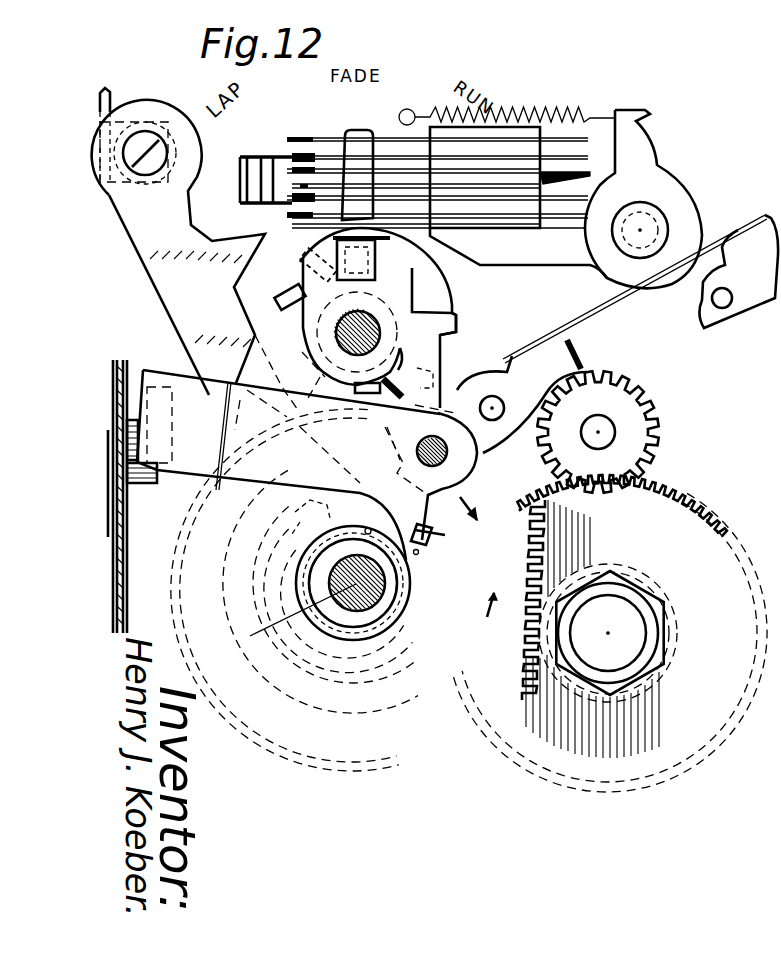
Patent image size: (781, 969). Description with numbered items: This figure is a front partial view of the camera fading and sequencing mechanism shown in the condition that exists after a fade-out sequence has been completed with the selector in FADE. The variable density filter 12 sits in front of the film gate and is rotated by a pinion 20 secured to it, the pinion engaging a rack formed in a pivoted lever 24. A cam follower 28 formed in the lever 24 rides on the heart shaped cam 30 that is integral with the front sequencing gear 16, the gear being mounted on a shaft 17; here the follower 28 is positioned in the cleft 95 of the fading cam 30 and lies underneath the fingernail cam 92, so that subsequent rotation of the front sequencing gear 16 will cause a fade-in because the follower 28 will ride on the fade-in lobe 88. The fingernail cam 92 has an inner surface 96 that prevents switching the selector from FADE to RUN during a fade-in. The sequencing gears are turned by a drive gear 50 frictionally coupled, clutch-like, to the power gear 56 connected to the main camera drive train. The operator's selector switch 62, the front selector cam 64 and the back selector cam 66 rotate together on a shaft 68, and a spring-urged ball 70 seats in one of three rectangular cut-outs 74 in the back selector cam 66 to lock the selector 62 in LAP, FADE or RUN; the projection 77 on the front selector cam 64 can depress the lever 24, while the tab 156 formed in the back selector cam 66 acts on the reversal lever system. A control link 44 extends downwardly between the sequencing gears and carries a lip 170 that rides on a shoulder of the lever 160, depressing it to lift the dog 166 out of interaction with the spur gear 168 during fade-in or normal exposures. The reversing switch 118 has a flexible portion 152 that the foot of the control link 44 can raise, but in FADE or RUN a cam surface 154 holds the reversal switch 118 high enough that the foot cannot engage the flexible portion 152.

The variable density filter 12 is at (131, 572).
The front sequencing gear 16 is at (445, 743).
The shaft 17 is at (290, 617).
The pinion 20 is at (140, 485).
The lever 24 is at (176, 480).
The cam follower 28 is at (428, 568).
The heart shaped cam 30 is at (353, 583).
The control link 44 is at (213, 240).
The drive gear 50 is at (598, 560).
The power gear 56 is at (665, 500).
The selector switch 62 is at (358, 140).
The front selector cam 64 is at (460, 326).
The back selector cam 66 is at (442, 290).
The shaft 68 is at (362, 303).
The ball 70 is at (325, 262).
The rectangular cut-outs 74 is at (286, 308).
The projection 77 is at (394, 370).
The fade-in lobe 88 is at (303, 545).
The fingernail cam 92 is at (432, 538).
The cleft 95 is at (357, 574).
The inner surface 96 is at (376, 522).
The reversing switch 118 is at (387, 145).
The flexible portion 152 is at (250, 178).
The cam surface 154 is at (375, 238).
The tab 156 is at (235, 385).
The lever 160 is at (617, 334).
The dog 166 is at (587, 370).
The spur gear 168 is at (658, 428).
The lip 170 is at (474, 408).